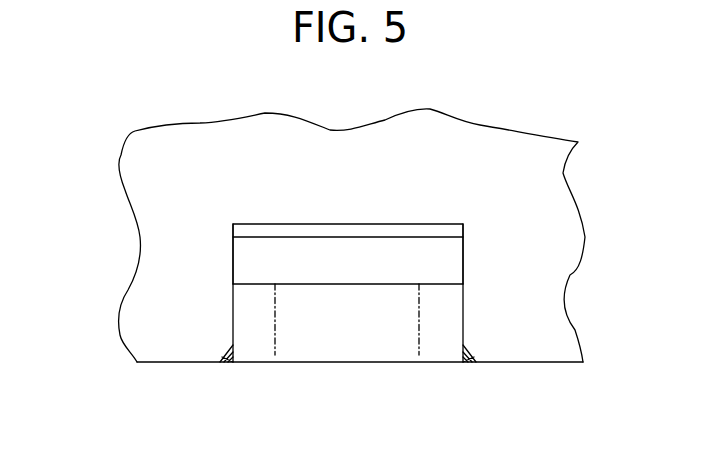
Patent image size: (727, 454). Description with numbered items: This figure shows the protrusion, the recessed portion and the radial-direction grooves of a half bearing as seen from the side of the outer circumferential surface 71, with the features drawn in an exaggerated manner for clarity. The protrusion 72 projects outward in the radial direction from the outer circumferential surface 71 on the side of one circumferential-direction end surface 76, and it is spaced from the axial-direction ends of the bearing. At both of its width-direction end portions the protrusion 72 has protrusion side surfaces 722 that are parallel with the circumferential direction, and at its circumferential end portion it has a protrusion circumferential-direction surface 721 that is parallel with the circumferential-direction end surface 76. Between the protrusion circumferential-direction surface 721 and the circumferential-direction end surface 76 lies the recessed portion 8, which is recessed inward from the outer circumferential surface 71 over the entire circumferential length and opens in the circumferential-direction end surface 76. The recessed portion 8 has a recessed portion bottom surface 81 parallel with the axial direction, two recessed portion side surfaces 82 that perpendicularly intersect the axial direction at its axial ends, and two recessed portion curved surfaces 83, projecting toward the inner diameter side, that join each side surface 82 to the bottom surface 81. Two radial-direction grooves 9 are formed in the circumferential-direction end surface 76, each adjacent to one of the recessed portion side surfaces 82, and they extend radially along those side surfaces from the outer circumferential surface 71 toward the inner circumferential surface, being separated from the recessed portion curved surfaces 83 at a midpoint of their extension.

The outer circumferential surface 71 is at (500, 165).
The protrusion 72 is at (303, 237).
The protrusion circumferential-direction surface 721 is at (235, 275).
The protrusion side surface 722 is at (463, 267).
The circumferential-direction end surface 76 is at (548, 363).
The recessed portion 8 is at (357, 343).
The recessed portion bottom surface 81 is at (326, 318).
The recessed portion side surface 82 is at (235, 328).
The recessed portion curved surface 83 is at (255, 343).
The radial-direction groove 9 is at (227, 362).